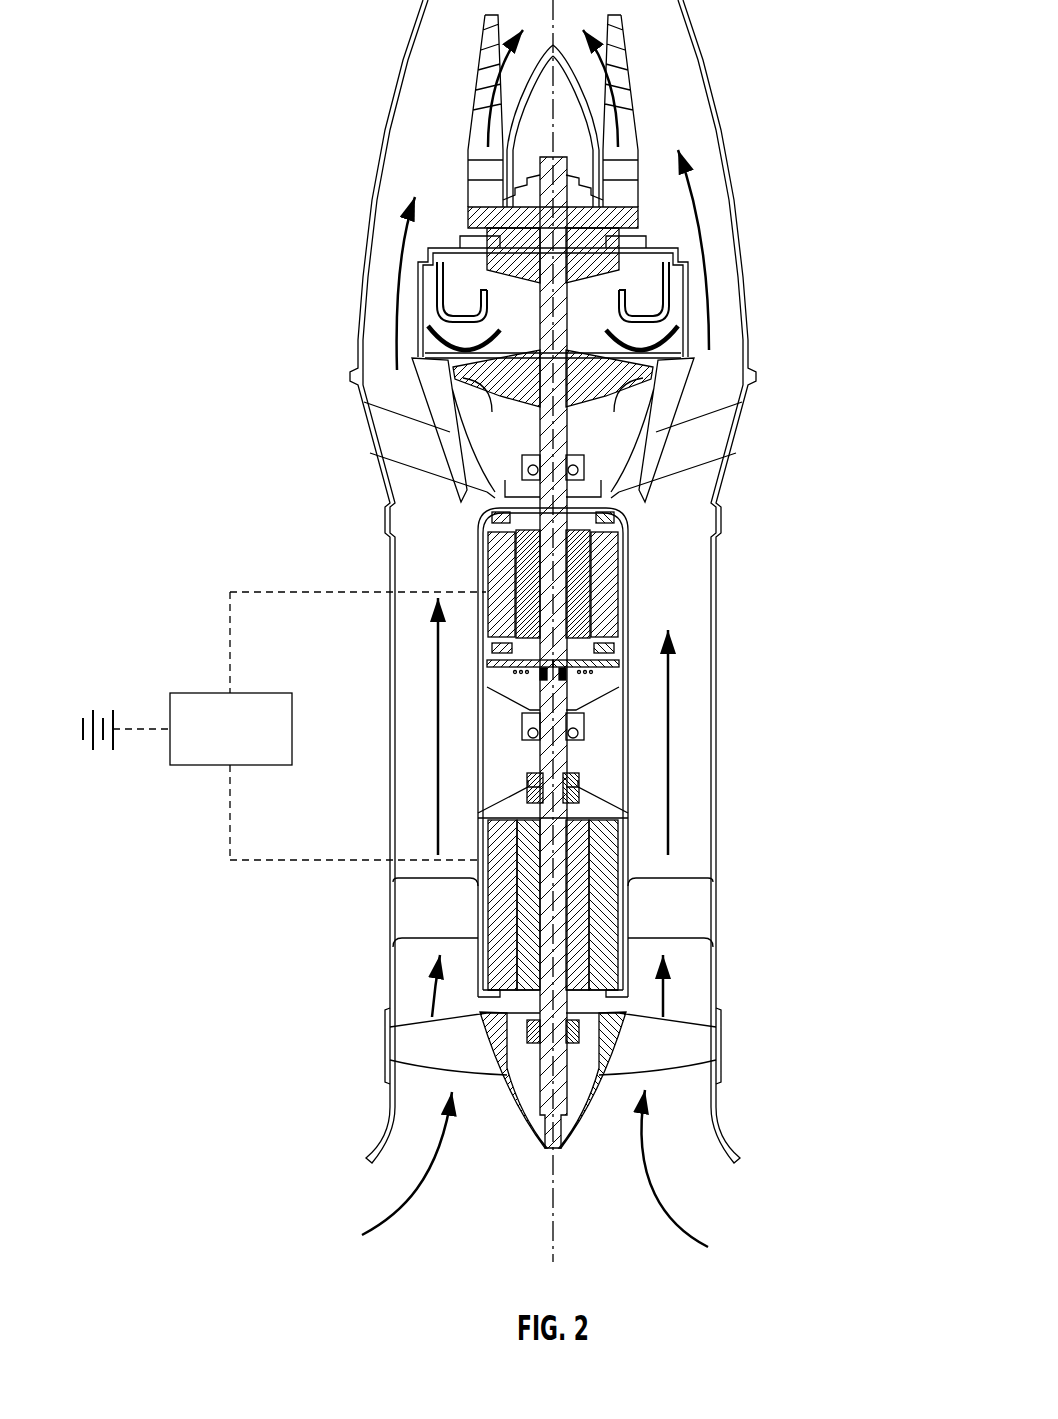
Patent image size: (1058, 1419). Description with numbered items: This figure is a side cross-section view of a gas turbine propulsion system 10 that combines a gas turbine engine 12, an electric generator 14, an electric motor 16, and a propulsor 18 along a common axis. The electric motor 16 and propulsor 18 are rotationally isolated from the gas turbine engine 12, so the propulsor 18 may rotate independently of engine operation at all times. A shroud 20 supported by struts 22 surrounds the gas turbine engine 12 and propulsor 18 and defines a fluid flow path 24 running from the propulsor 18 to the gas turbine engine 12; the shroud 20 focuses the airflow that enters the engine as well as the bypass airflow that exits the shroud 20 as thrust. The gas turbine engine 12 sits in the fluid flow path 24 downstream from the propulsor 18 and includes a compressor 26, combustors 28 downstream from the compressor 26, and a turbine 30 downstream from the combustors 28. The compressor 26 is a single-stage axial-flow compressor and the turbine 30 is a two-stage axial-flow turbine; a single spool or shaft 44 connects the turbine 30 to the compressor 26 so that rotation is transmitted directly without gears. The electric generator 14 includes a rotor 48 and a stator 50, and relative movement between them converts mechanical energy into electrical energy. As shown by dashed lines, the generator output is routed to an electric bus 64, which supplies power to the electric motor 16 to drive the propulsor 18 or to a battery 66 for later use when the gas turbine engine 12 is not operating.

The gas turbine propulsion system 10 is at (195, 255).
The gas turbine engine 12 is at (357, 158).
The electric generator 14 is at (377, 737).
The electric motor 16 is at (377, 765).
The propulsor 18 is at (382, 1000).
The shroud 20 is at (720, 1112).
The struts 22 is at (702, 440).
The fluid flow path 24 is at (668, 707).
The compressor 26 is at (595, 363).
The combustors 28 is at (665, 285).
The turbine 30 is at (585, 212).
The shaft 44 is at (558, 176).
The rotor 48 is at (573, 565).
The stator 50 is at (607, 605).
The electric bus 64 is at (243, 751).
The battery 66 is at (93, 748).